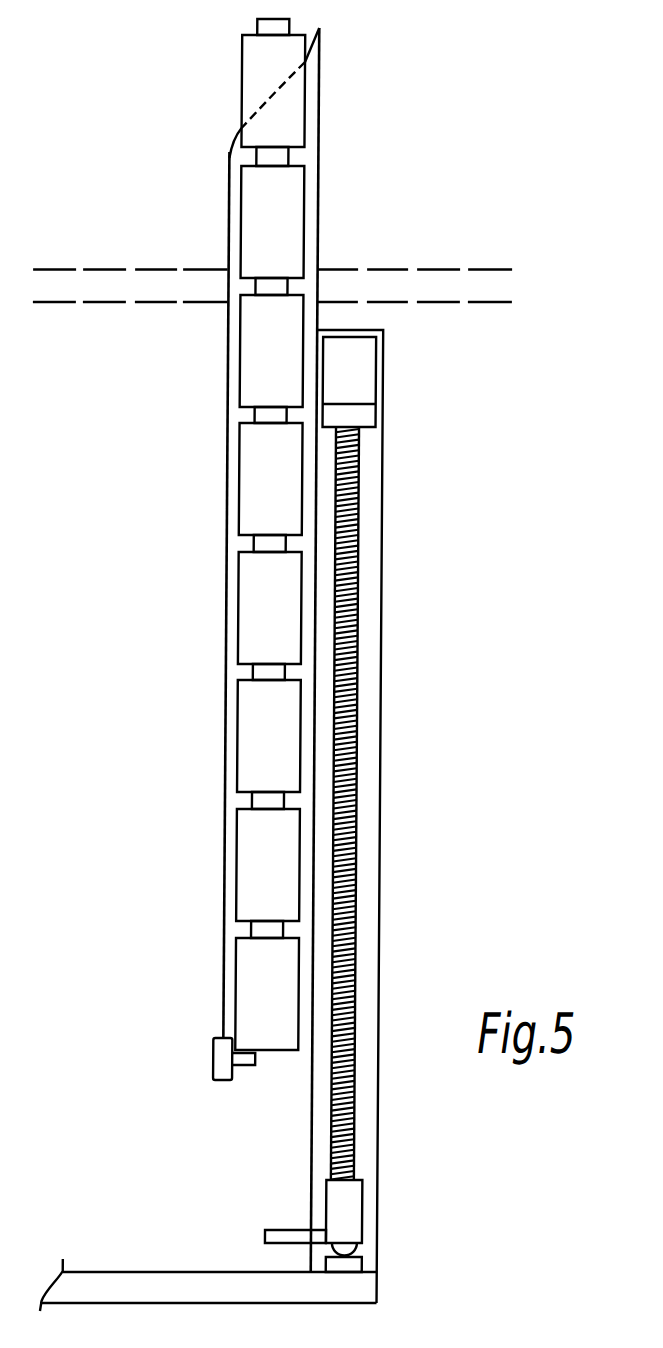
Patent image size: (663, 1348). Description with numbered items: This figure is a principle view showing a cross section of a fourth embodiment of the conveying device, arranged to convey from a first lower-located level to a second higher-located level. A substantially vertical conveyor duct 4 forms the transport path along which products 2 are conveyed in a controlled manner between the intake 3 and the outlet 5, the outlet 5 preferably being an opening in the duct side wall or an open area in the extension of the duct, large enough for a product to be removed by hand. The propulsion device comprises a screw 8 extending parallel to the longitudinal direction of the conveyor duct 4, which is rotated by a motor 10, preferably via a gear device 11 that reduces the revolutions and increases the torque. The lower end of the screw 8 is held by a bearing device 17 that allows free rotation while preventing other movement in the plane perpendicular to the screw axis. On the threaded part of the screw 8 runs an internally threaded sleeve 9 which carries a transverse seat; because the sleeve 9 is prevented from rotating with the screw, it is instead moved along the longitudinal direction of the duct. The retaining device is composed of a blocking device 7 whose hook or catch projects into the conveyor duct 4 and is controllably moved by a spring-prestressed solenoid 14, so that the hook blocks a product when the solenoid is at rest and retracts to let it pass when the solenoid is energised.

The products 2 is at (251, 368).
The intake 3 is at (246, 1115).
The conveyor duct 4 is at (224, 621).
The outlet 5 is at (228, 148).
The blocking device 7 is at (243, 1066).
The screw 8 is at (357, 929).
The internally threaded sleeve 9 is at (354, 1200).
The motor 10 is at (363, 358).
The gear device 11 is at (363, 414).
The spring-prestressed solenoid 14 is at (218, 1053).
The bearing device 17 is at (359, 1268).